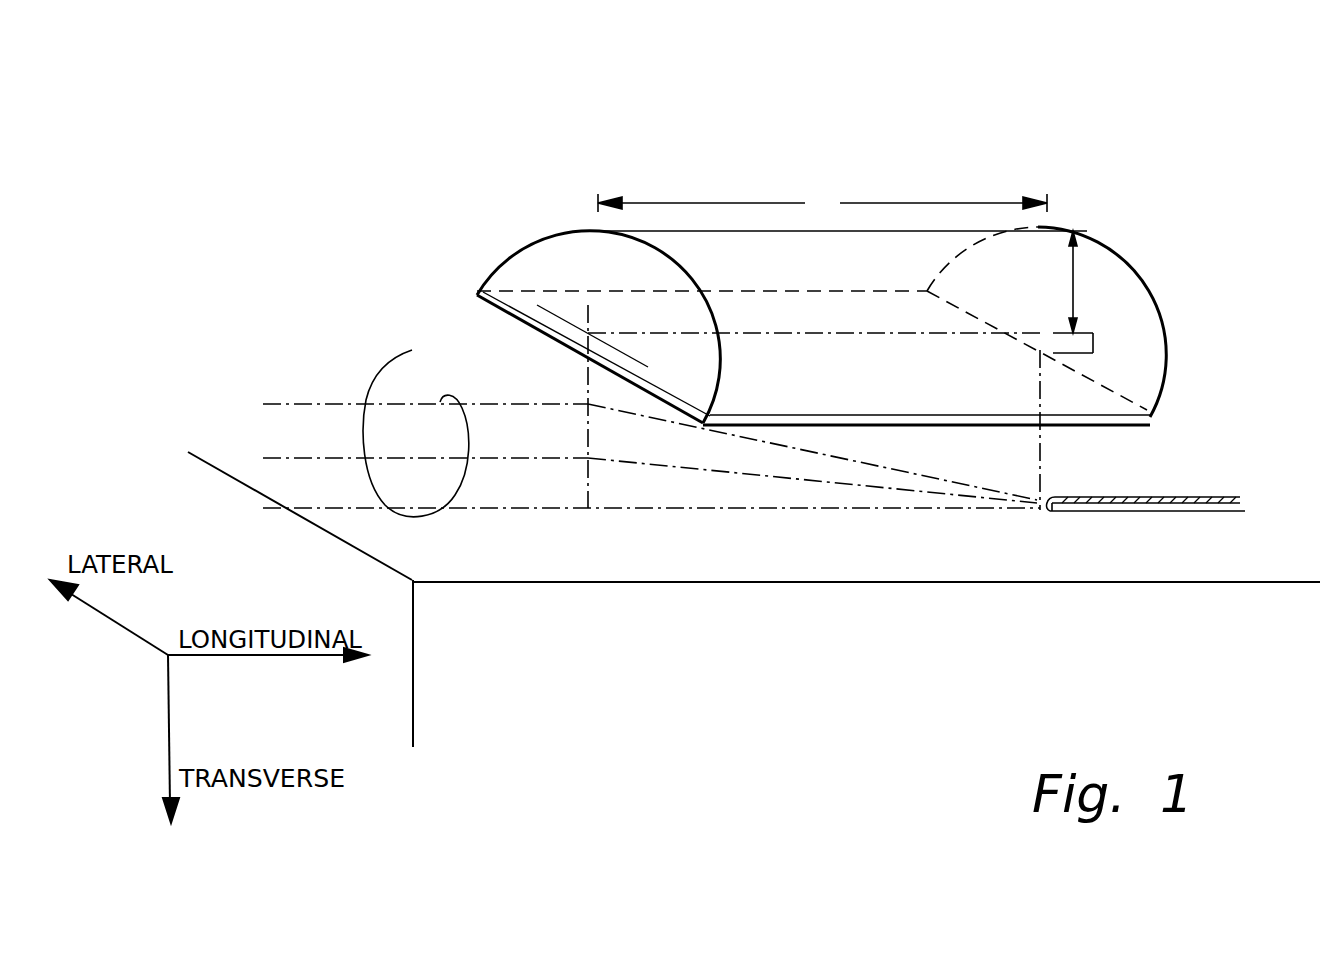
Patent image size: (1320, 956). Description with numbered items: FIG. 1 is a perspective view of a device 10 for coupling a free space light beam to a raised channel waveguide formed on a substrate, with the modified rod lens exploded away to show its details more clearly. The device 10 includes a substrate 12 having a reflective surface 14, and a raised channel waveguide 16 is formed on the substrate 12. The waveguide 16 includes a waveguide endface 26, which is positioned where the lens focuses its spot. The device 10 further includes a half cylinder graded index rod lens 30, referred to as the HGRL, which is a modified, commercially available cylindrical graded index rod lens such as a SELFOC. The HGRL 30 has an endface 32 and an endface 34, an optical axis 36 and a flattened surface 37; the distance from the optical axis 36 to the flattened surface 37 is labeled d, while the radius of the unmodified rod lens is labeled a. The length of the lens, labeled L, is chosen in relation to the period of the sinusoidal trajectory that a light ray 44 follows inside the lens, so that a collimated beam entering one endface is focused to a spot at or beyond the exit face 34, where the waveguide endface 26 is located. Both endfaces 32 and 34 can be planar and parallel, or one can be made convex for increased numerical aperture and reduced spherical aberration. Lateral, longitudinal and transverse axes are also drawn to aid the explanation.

The device 10 is at (1205, 158).
The substrate 12 is at (977, 622).
The reflective surface 14 is at (1027, 550).
The raised channel waveguide 16 is at (1190, 495).
The waveguide endface 26 is at (1048, 497).
The half cylinder graded index rod lens 30 is at (819, 315).
The endface 32 is at (525, 272).
The endface 34 is at (1120, 295).
The optical axis 36 is at (743, 333).
The flattened surface 37 is at (938, 427).
The light ray 44 is at (416, 425).